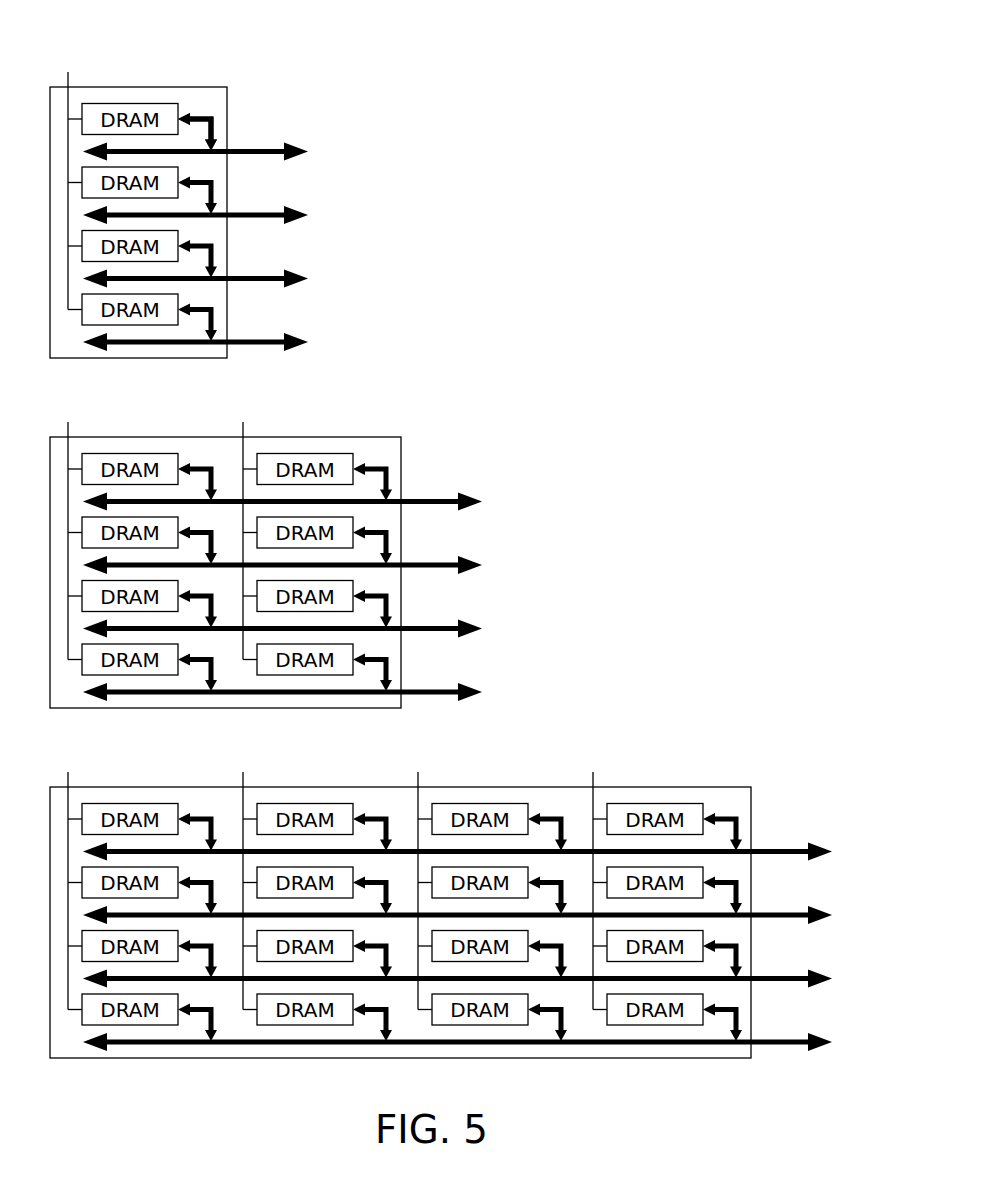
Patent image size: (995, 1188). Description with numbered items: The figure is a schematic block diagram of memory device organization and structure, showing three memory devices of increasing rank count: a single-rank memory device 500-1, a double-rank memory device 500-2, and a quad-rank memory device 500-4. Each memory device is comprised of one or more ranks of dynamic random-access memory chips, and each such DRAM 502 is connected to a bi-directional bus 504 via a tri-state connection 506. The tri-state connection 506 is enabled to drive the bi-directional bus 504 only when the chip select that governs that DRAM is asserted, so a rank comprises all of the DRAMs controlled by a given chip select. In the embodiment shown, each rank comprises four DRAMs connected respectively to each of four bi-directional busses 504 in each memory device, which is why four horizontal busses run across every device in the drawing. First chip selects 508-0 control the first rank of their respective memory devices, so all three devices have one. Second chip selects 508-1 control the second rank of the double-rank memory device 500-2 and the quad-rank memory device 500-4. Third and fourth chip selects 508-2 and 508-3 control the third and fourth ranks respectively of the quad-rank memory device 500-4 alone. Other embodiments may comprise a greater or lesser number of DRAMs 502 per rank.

The single-rank memory device 500-1 is at (202, 197).
The double-rank memory device 500-2 is at (389, 437).
The quad-rank memory device 500-4 is at (739, 787).
The dynamic random-access memory chip 502 is at (125, 103).
The bi-directional bus 504 is at (255, 148).
The tri-state connection 506 is at (213, 130).
The first chip select 508-0 is at (93, 57).
The second chip select 508-1 is at (268, 407).
The third chip select 508-2 is at (443, 756).
The fourth chip select 508-3 is at (618, 756).